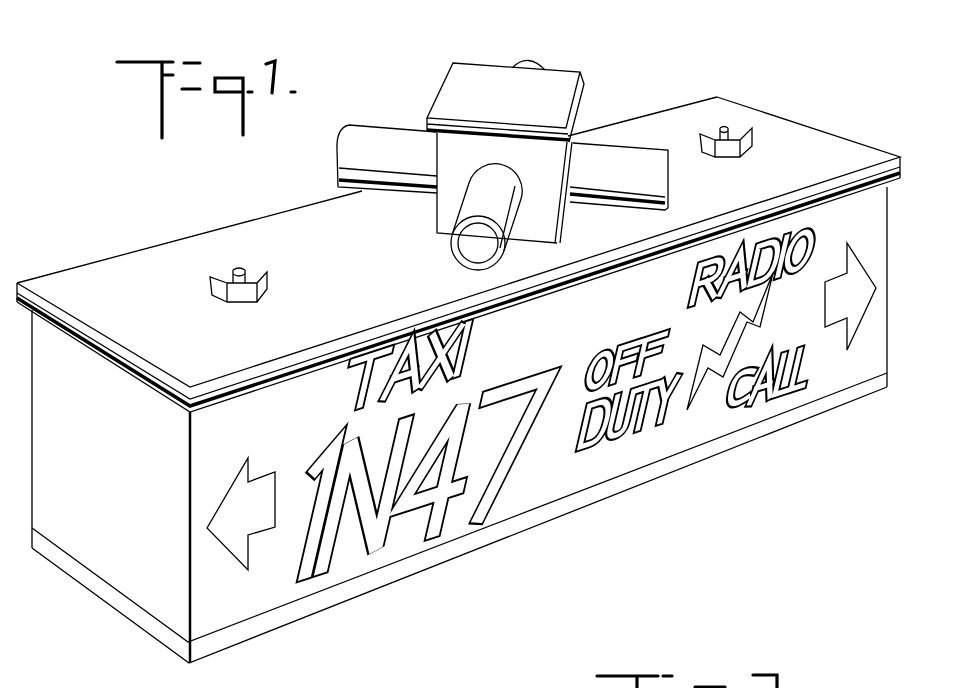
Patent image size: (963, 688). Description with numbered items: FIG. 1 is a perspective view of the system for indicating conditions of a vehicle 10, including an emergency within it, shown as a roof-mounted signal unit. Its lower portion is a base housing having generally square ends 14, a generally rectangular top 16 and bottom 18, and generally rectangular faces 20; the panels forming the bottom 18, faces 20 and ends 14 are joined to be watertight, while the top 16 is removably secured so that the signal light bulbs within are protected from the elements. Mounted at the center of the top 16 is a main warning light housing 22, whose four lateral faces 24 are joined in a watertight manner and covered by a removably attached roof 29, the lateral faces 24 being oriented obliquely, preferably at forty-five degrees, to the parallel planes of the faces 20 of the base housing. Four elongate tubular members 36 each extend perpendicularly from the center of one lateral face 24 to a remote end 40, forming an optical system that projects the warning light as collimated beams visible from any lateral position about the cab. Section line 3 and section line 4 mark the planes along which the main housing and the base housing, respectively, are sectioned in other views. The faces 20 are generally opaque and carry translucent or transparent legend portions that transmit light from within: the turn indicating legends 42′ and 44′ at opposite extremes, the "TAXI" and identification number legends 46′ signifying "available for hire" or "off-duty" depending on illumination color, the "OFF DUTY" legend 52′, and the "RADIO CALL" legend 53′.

The system for indicating conditions of a vehicle 10 is at (458, 392).
The ends 14 is at (110, 568).
The top 16 is at (84, 285).
The bottom 18 is at (238, 647).
The faces 20 is at (273, 417).
The main warning light housing 22 is at (504, 150).
The lateral faces 24 is at (521, 176).
The roof 29 is at (458, 82).
The tubular members 36 is at (390, 142).
The remote end 40 is at (338, 162).
The section line 3 is at (363, 223).
The section line 4 is at (38, 488).
The turn indicating legend 42′ is at (233, 560).
The turn indicating legend 44′ is at (860, 312).
The "TAXI" and identification number legends 46′ is at (487, 383).
The "OFF DUTY" legend 52′ is at (618, 345).
The "RADIO CALL" legend 53′ is at (790, 267).